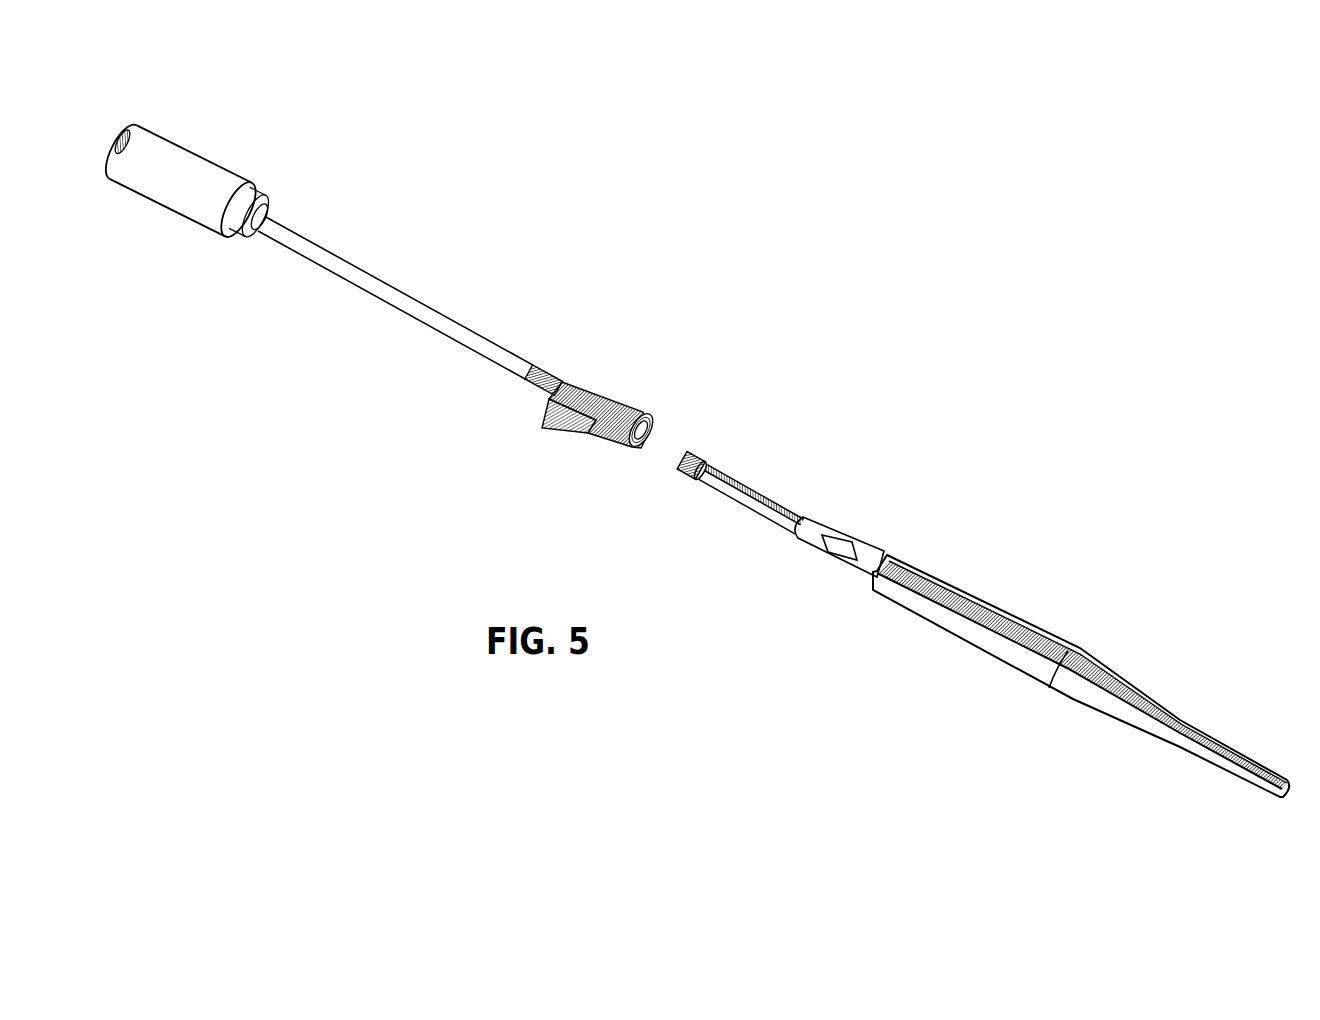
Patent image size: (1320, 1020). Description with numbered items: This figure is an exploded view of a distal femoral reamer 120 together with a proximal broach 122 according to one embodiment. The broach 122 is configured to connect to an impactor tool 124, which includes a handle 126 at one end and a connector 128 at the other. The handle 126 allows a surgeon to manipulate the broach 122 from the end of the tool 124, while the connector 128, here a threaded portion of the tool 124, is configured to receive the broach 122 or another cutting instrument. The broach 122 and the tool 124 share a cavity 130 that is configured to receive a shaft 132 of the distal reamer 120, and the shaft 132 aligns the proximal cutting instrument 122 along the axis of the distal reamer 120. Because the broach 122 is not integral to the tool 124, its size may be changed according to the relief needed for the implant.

The distal femoral reamer 120 is at (1051, 611).
The proximal broach 122 is at (607, 390).
The impactor tool 124 is at (464, 269).
The handle 126 is at (202, 156).
The connector 128 is at (560, 397).
The cavity 130 is at (650, 452).
The shaft 132 is at (763, 495).